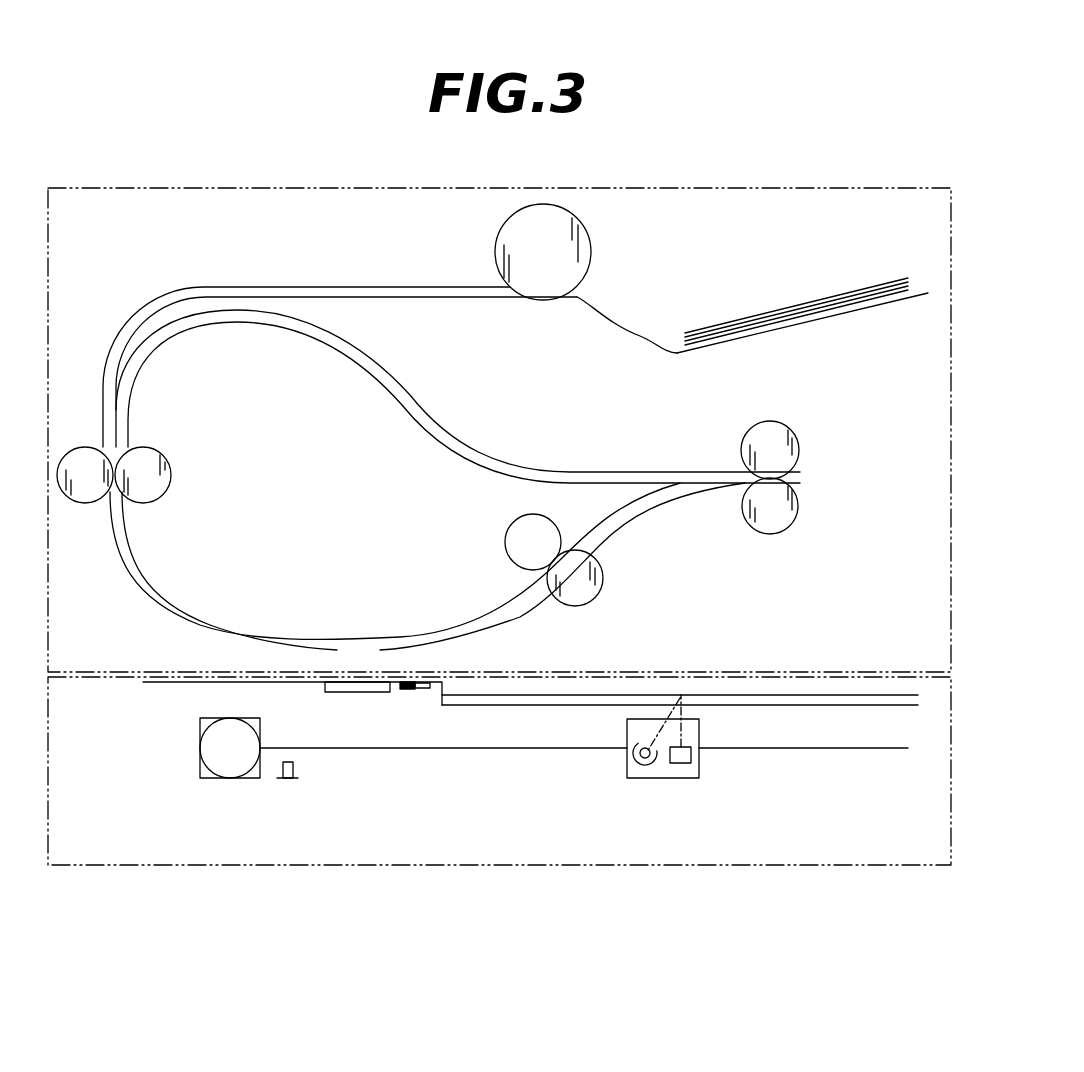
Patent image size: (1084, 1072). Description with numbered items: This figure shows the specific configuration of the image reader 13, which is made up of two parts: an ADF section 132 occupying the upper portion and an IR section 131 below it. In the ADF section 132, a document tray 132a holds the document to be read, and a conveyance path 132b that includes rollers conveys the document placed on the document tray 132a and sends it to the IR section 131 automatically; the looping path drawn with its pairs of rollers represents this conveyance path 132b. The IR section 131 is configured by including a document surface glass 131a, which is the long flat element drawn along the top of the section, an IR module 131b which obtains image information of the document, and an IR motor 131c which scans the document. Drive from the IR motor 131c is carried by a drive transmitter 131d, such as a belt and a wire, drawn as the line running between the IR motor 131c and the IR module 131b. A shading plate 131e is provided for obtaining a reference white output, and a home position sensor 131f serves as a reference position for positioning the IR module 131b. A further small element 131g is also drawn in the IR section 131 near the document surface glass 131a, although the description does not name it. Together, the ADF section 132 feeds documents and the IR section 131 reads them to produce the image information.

The image reader 13 is at (743, 931).
The ADF section 132 is at (902, 188).
The document tray 132a is at (843, 318).
The conveyance path 132b is at (260, 284).
The IR section 131 is at (573, 867).
The document surface glass 131a is at (833, 700).
The IR module 131b is at (663, 770).
The IR motor 131c is at (205, 777).
The drive transmitter 131d is at (850, 749).
The shading plate 131e is at (415, 688).
The home position sensor 131f is at (285, 782).
The sensor 131g is at (342, 686).